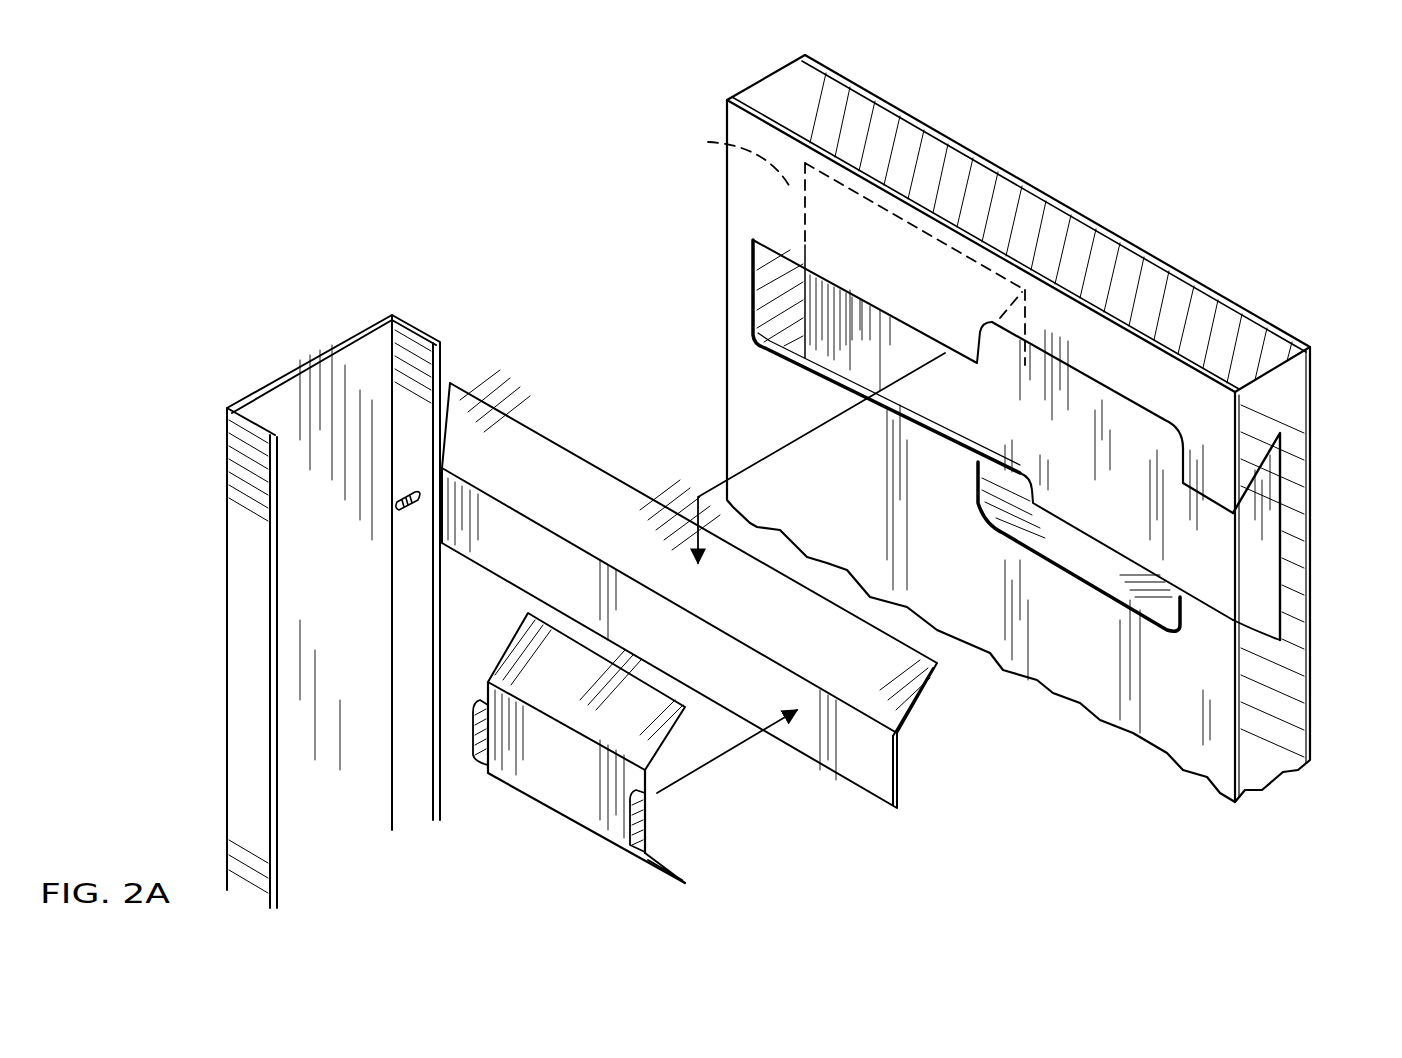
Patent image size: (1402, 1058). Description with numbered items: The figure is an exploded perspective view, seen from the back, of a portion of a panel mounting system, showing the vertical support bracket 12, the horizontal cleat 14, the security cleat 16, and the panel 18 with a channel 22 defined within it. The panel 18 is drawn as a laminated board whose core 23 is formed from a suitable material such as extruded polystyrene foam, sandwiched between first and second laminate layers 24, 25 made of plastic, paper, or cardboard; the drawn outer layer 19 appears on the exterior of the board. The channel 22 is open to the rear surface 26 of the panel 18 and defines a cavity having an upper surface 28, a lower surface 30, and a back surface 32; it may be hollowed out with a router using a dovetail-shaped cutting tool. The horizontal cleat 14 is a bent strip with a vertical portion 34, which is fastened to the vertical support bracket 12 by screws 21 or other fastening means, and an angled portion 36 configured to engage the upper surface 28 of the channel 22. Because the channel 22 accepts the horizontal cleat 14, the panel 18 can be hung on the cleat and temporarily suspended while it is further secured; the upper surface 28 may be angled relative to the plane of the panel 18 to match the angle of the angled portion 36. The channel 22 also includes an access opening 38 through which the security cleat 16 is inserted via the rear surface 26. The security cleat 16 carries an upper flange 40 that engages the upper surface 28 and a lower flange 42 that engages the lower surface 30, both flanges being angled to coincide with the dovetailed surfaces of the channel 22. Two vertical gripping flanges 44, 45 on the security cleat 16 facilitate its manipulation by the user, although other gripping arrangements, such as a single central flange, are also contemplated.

The vertical support bracket 12 is at (296, 366).
The horizontal cleat 14 is at (703, 593).
The security cleat 16 is at (587, 752).
The panel 18 is at (1016, 422).
The exterior sheathing 19 is at (1155, 259).
The screws 21 is at (396, 507).
The channel 22 is at (1260, 545).
The core 23 is at (782, 80).
The first laminate layer 24 is at (962, 145).
The second laminate layer 25 is at (727, 196).
The rear surface 26 is at (755, 375).
The upper surface 28 is at (1332, 493).
The lower surface 30 is at (790, 350).
The back surface 32 is at (1018, 469).
The vertical portion 34 is at (832, 748).
The angled portion 36 is at (600, 484).
The access opening 38 is at (1085, 550).
The upper flange 40 is at (668, 725).
The lower flange 42 is at (662, 868).
The gripping flange 44 is at (633, 827).
The gripping flange 45 is at (473, 718).